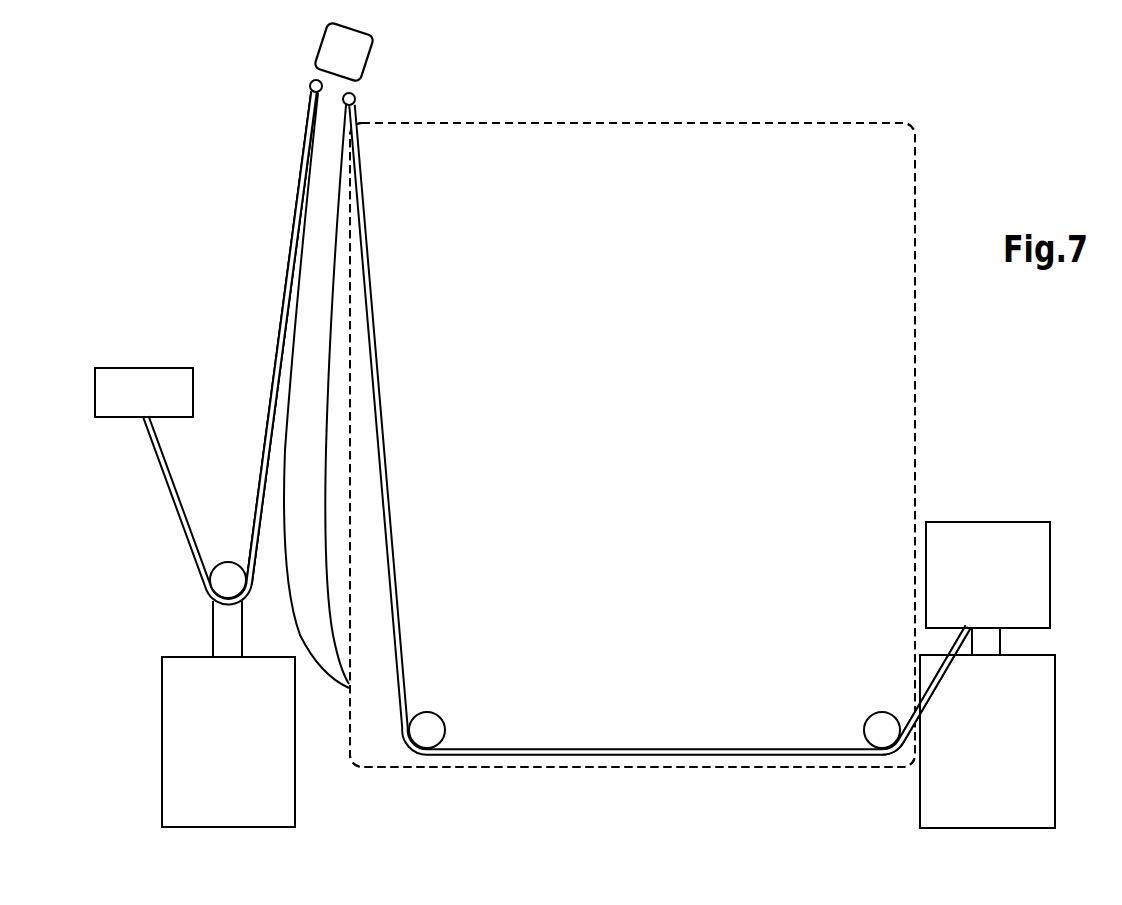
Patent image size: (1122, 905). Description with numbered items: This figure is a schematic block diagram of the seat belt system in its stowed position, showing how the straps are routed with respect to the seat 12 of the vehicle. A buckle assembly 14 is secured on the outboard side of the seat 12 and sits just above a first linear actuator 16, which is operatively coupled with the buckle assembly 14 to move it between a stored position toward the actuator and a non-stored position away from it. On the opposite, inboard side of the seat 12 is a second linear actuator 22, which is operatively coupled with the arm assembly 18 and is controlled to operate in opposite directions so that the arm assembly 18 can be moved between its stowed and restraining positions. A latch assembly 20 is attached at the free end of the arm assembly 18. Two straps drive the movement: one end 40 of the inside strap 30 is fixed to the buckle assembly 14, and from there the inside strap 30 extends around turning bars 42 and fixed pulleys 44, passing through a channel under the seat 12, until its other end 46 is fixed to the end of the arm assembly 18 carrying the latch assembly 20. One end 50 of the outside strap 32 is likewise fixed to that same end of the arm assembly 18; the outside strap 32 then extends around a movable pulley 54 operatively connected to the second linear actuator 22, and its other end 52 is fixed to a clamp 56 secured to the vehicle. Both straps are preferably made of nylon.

The seat 12 is at (513, 767).
The buckle assembly 14 is at (1047, 557).
The first linear actuator 16 is at (972, 817).
The arm assembly 18 is at (243, 160).
The latch assembly 20 is at (337, 55).
The second linear actuator 22 is at (235, 822).
The inside strap 30 is at (667, 772).
The outside strap 32 is at (256, 300).
The end of the inside strap 40 is at (935, 677).
The turning bars 42 is at (872, 722).
The fixed pulleys 44 is at (423, 717).
The other end of the inside strap 46 is at (373, 352).
The end of the outside strap 50 is at (272, 413).
The other end of the outside strap 52 is at (170, 492).
The movable pulley 54 is at (222, 578).
The clamp 56 is at (95, 393).